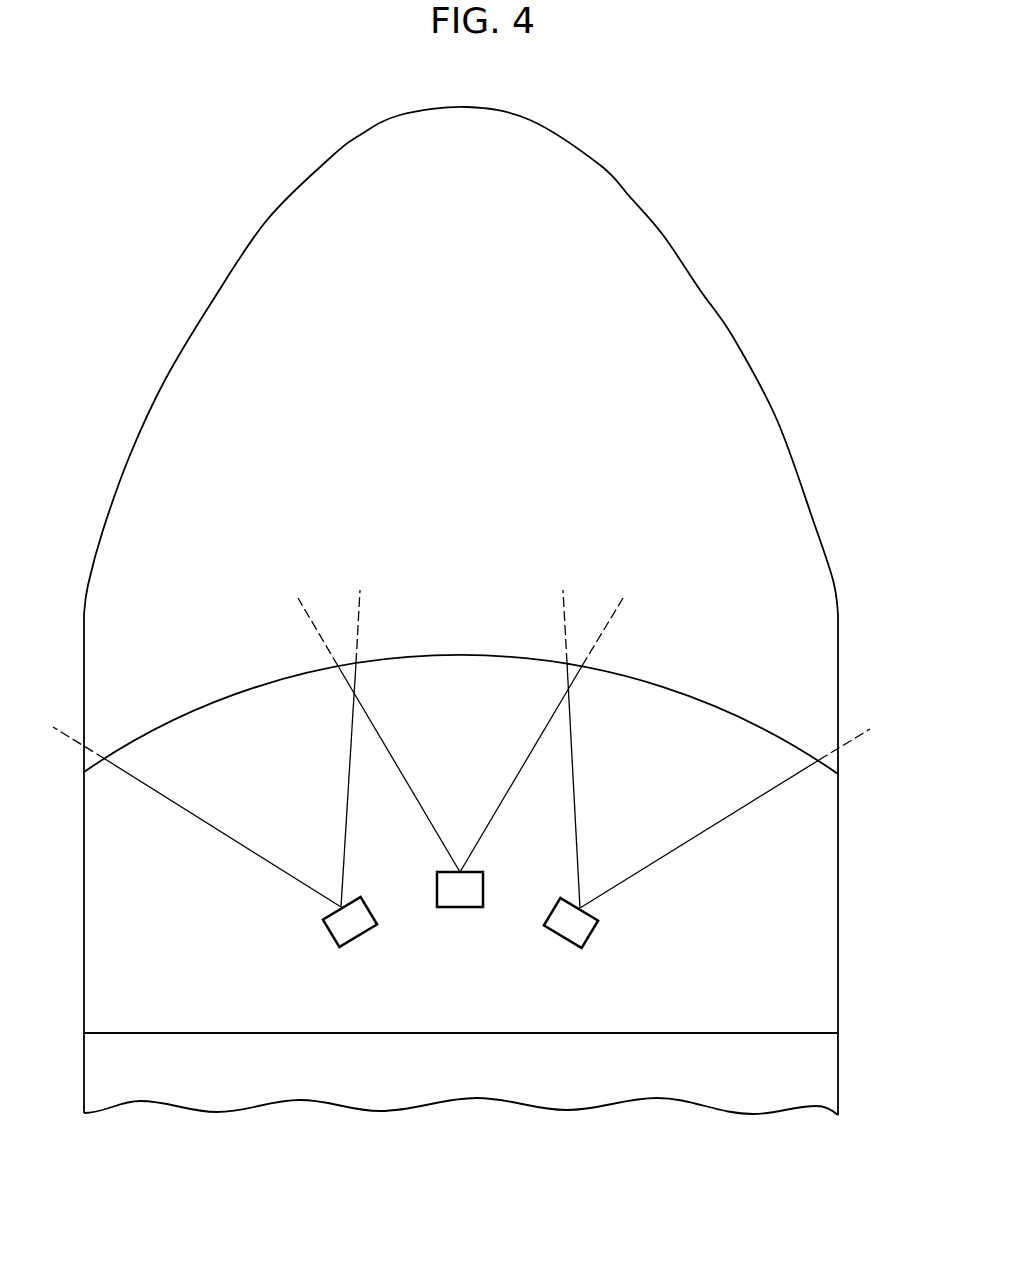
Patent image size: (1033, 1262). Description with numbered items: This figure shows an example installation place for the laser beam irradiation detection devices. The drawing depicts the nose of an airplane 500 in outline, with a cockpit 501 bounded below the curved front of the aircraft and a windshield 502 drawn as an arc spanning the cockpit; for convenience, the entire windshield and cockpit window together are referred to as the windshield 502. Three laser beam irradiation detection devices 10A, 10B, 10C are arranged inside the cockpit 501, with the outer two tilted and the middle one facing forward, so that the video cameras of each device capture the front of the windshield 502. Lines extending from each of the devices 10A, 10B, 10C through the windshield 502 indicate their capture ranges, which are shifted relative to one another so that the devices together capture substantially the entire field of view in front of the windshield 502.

The airplane 500 is at (750, 372).
The cockpit 501 is at (822, 935).
The windshield 502 is at (732, 712).
The laser beam irradiation detection device 10A is at (353, 947).
The laser beam irradiation detection device 10B is at (459, 907).
The laser beam irradiation detection device 10C is at (567, 950).